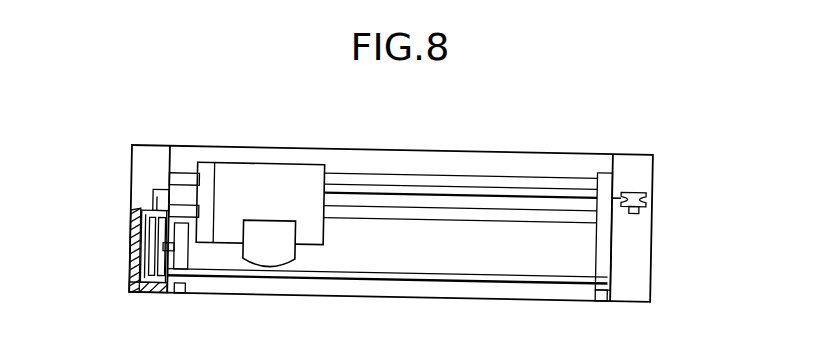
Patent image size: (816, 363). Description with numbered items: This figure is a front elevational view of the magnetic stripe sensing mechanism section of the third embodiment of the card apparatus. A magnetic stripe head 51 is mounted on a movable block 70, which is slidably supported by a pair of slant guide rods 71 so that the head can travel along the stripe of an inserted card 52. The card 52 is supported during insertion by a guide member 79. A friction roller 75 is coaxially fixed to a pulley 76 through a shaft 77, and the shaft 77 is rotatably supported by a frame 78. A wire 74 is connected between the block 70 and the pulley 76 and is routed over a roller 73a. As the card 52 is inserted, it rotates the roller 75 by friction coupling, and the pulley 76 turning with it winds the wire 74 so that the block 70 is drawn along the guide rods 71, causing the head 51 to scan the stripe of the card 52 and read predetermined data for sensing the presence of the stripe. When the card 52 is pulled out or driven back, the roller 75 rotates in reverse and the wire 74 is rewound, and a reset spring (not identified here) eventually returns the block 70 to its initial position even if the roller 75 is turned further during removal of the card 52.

The movable block 70 is at (286, 178).
The guide rods 71 is at (448, 206).
The wire 74 is at (533, 193).
The roller 73a is at (645, 193).
The frame 78 is at (634, 252).
The pulley 76 is at (151, 256).
The shaft 77 is at (160, 278).
The guide member 79 is at (183, 294).
The roller 75 is at (185, 256).
The magnetic stripe head 51 is at (274, 262).
The card 52 is at (490, 283).